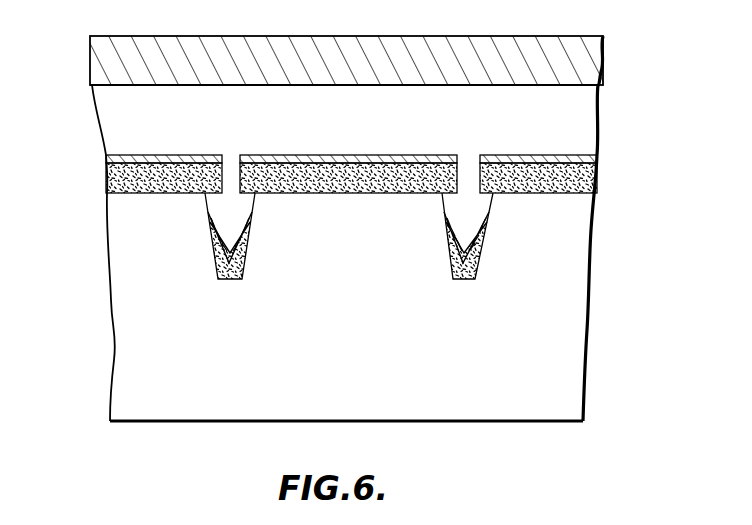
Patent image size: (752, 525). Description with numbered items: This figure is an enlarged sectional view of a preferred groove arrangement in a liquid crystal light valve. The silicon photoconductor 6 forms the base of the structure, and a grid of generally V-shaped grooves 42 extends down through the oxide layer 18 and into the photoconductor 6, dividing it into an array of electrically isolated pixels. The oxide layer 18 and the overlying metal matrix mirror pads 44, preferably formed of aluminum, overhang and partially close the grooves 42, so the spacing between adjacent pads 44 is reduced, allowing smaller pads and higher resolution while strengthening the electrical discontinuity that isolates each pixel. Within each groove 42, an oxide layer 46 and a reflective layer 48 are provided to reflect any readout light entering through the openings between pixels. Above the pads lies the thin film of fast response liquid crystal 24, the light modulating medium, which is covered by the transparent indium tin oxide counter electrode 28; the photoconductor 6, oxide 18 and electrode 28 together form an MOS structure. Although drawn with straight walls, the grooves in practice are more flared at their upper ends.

The silicon photoconductor 6 is at (127, 353).
The oxide layer 18 is at (580, 181).
The liquid crystal 24 is at (107, 109).
The counter electrode 28 is at (102, 55).
The grooves 42 is at (229, 190).
The metal matrix mirror pads 44 is at (125, 155).
The oxide layer within groove 46 is at (477, 274).
The reflective layer within groove 48 is at (487, 217).